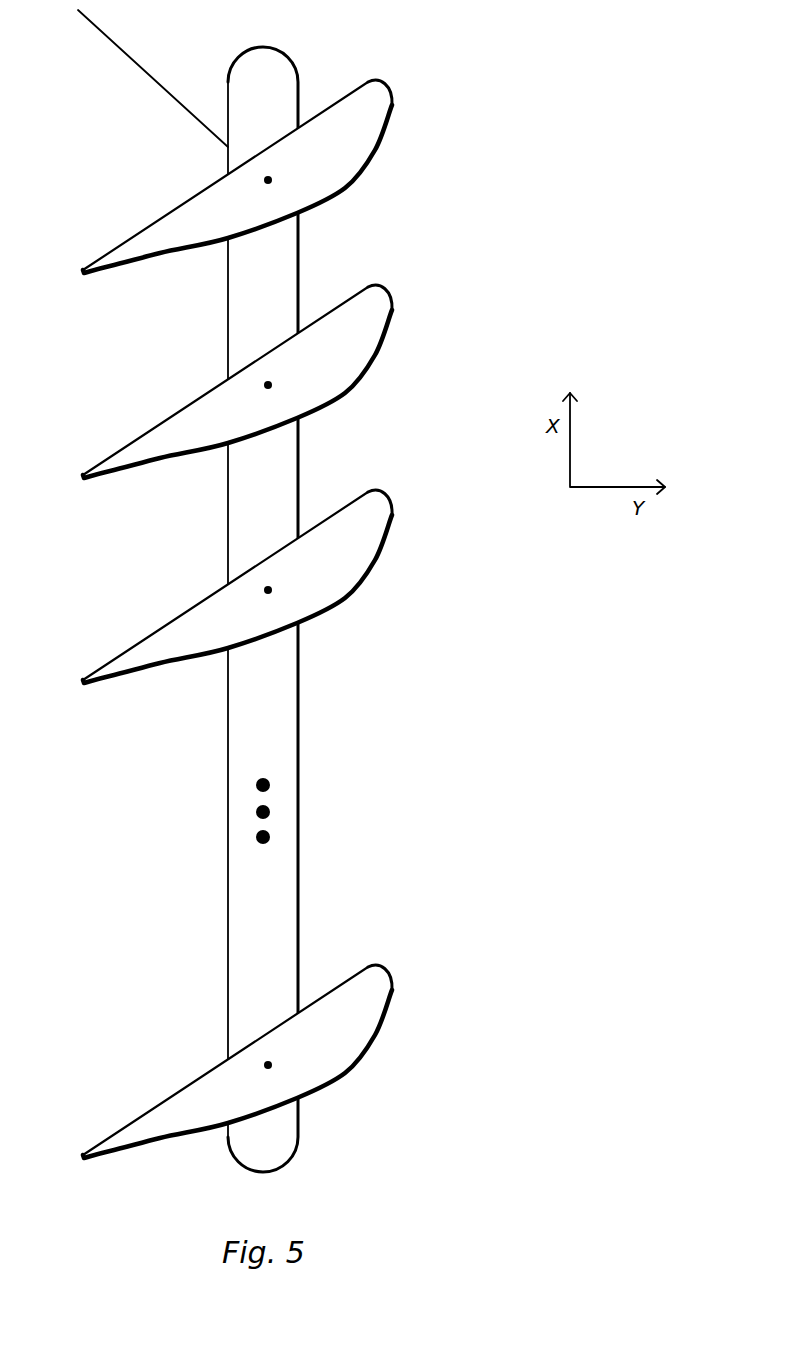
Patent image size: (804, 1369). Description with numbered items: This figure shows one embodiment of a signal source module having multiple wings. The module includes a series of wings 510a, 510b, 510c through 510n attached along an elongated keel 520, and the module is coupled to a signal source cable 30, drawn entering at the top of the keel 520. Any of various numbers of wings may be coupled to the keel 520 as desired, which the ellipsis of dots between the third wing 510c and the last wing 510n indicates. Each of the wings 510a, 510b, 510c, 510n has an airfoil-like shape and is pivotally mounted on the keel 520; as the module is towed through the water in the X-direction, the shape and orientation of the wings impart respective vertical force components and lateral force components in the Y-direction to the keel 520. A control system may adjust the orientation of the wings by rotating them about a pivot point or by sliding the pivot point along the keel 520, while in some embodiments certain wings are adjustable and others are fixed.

The signal source cable 30 is at (132, 65).
The wing 510a is at (393, 123).
The wing 510b is at (393, 328).
The wing 510c is at (393, 532).
The wing 510n is at (393, 1010).
The keel 520 is at (298, 693).